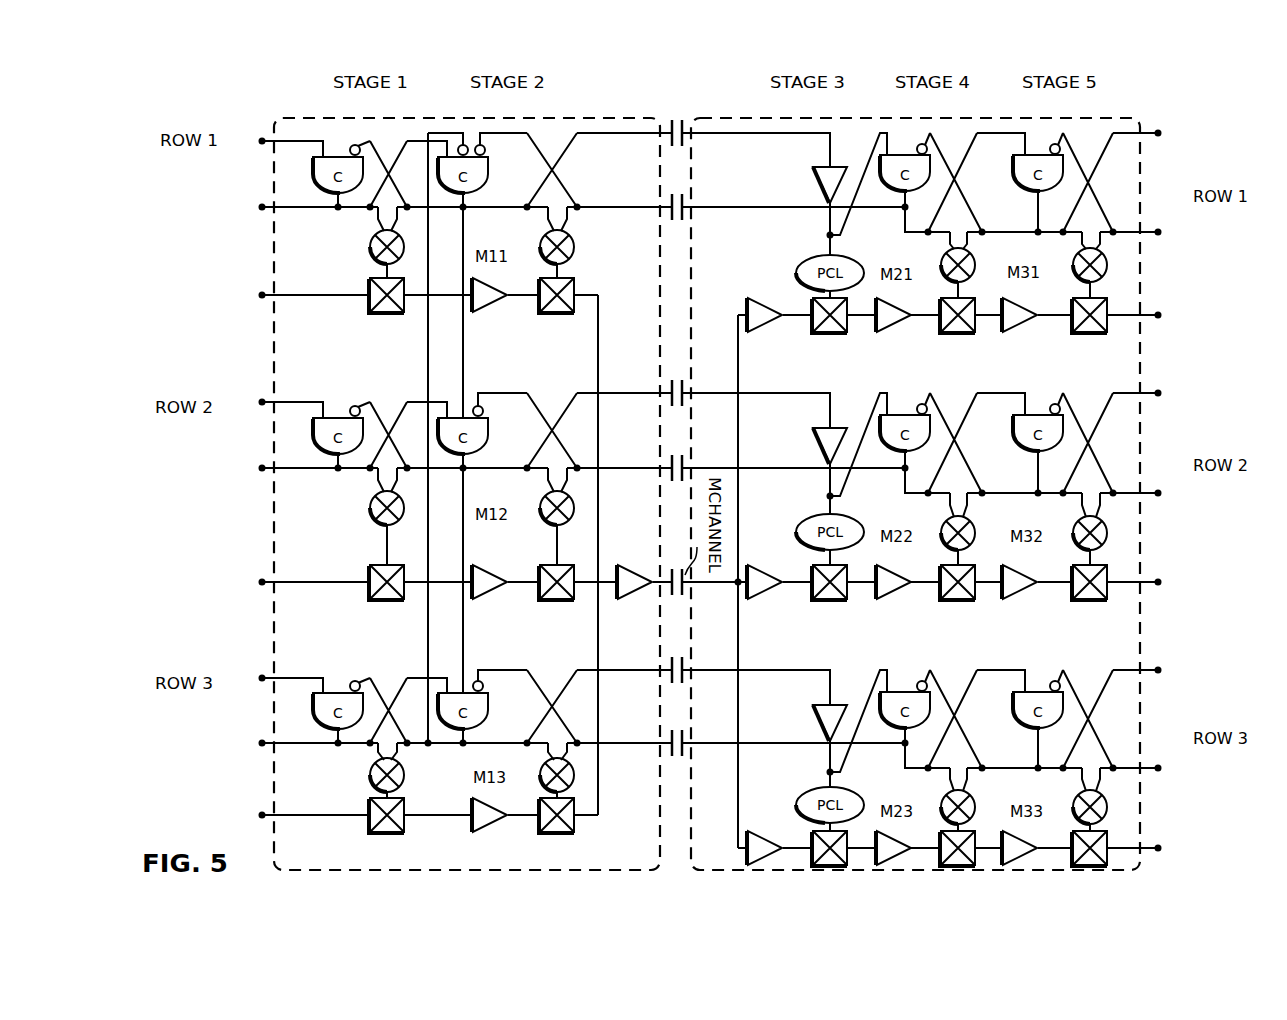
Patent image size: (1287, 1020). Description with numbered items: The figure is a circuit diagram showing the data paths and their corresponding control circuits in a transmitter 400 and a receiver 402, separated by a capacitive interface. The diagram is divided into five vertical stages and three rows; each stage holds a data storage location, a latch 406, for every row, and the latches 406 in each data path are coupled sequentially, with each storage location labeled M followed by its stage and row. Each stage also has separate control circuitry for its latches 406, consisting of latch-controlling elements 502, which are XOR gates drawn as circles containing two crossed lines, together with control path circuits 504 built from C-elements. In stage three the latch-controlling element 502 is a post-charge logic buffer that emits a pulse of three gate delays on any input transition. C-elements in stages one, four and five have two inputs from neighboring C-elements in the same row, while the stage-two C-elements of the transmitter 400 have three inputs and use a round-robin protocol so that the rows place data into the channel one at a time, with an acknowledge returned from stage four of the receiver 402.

The transmitter 400 is at (263, 119).
The receiver 402 is at (1150, 807).
The latch 406 is at (363, 554).
The latch-controlling element 502 is at (360, 251).
The control path circuits 504 is at (950, 142).